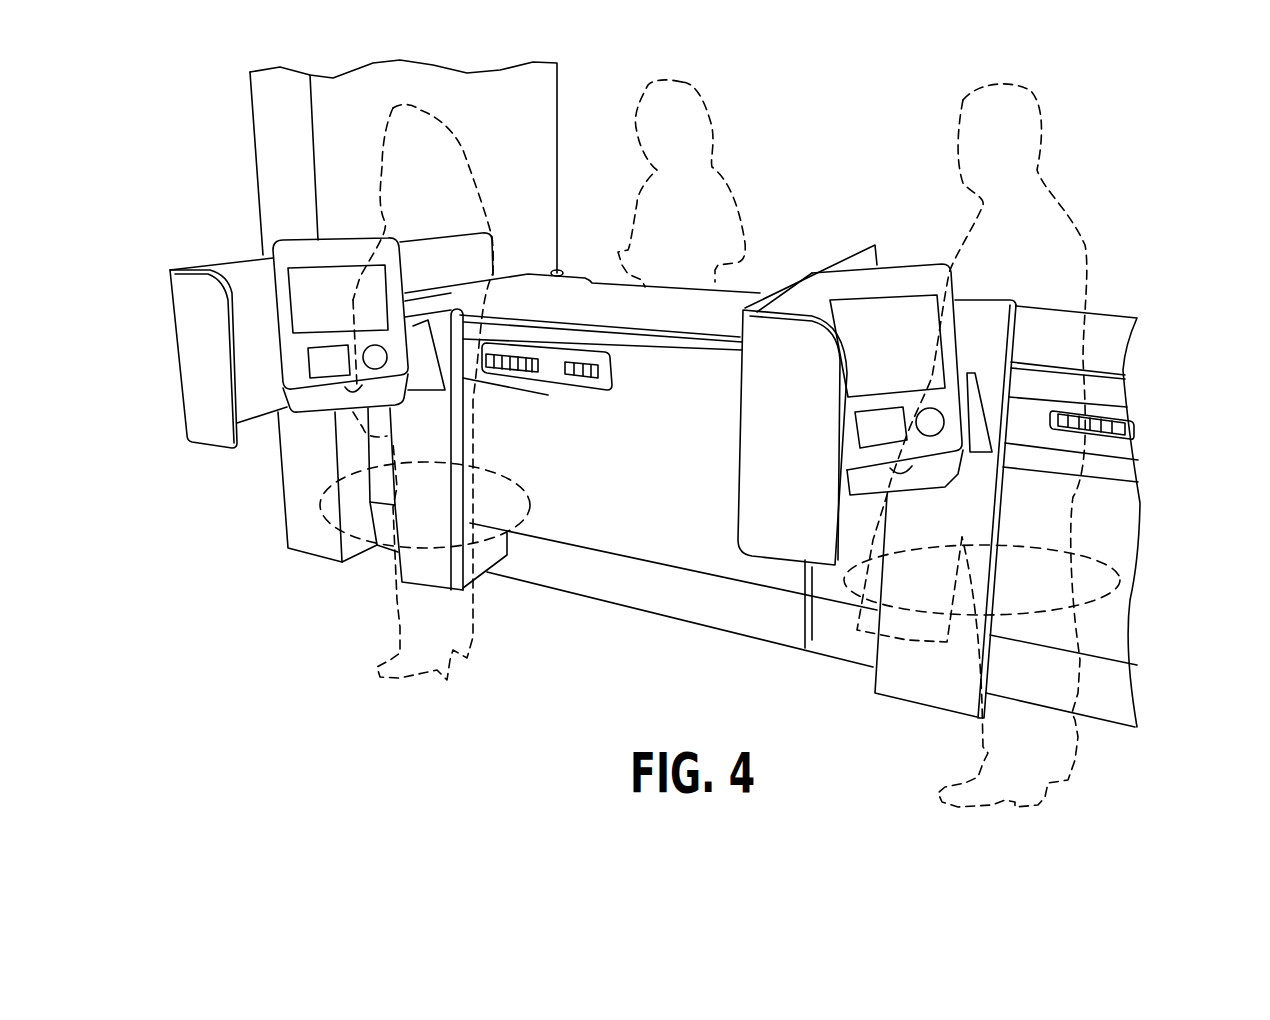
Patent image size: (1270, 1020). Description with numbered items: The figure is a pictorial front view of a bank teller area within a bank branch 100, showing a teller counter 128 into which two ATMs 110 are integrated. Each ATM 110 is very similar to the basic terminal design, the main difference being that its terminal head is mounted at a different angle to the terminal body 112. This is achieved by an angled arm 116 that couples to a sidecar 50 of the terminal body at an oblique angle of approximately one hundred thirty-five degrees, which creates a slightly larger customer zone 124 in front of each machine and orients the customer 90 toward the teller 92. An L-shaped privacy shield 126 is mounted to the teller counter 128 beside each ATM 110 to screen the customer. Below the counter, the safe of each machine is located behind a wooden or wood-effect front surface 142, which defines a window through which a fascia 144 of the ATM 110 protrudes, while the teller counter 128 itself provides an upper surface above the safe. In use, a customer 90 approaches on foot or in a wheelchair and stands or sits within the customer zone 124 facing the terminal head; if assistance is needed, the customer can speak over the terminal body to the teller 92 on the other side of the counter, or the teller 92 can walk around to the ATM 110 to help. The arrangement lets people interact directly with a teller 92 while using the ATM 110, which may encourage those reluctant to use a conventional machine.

The sidecar 50 is at (560, 273).
The customer 90 is at (422, 112).
The teller 92 is at (687, 83).
The bank branch 100 is at (245, 633).
The ATM 110 is at (513, 633).
The terminal body 112 is at (660, 542).
The angled arm 116 is at (418, 363).
The customer zone 124 is at (323, 515).
The L-shaped privacy shield 126 is at (180, 267).
The teller counter 128 is at (1120, 317).
The front surface 142 is at (638, 347).
The fascia 144 is at (552, 378).